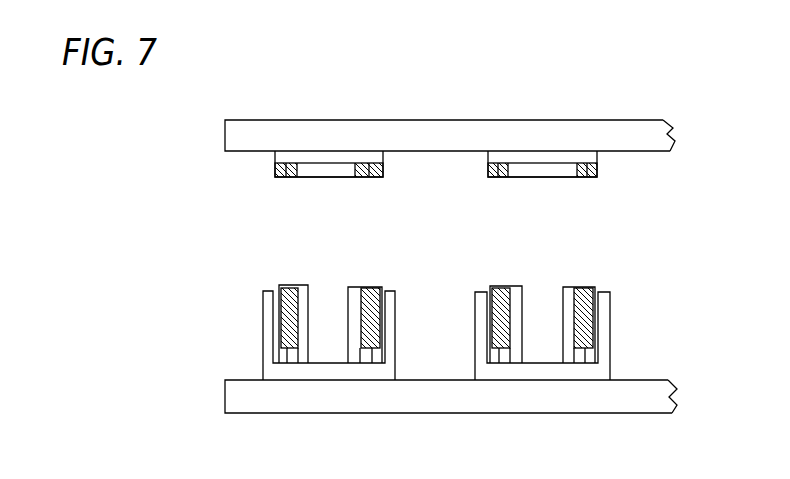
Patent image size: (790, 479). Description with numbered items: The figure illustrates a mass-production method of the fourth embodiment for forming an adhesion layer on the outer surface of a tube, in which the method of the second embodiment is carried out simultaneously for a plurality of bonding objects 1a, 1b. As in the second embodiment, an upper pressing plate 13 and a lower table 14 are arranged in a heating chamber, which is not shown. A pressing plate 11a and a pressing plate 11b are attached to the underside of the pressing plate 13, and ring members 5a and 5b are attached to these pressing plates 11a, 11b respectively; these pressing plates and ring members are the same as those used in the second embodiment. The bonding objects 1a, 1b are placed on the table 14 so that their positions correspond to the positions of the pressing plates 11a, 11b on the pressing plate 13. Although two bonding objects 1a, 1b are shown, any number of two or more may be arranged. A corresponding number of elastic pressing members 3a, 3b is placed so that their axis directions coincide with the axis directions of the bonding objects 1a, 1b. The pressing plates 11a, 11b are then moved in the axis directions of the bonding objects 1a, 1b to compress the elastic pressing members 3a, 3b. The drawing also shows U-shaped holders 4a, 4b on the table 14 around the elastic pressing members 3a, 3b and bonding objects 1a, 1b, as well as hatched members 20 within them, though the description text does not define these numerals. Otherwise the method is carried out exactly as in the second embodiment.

The pressing plate 13 is at (600, 123).
The table 14 is at (620, 388).
The ring member 5a is at (275, 174).
The ring member 5b is at (488, 174).
The pressing plate 11a is at (338, 158).
The pressing plate 11b is at (598, 164).
The first yoke 4a is at (270, 352).
The second yoke 4b is at (485, 352).
The elastic pressing member 3a is at (279, 286).
The elastic pressing member 3b is at (490, 287).
The bonding object 1a is at (350, 292).
The bonding object 1b is at (566, 294).
The permanent magnet 20 is at (295, 287).